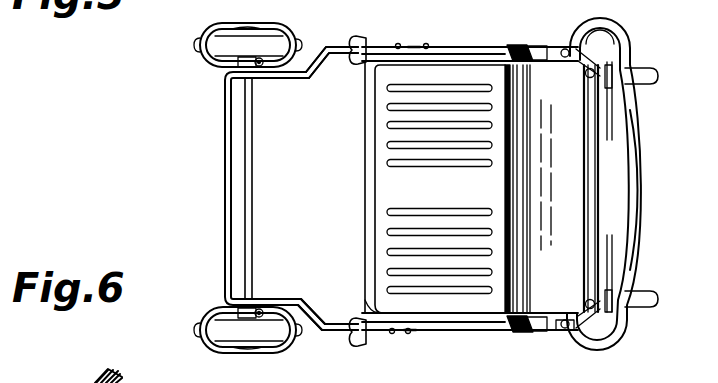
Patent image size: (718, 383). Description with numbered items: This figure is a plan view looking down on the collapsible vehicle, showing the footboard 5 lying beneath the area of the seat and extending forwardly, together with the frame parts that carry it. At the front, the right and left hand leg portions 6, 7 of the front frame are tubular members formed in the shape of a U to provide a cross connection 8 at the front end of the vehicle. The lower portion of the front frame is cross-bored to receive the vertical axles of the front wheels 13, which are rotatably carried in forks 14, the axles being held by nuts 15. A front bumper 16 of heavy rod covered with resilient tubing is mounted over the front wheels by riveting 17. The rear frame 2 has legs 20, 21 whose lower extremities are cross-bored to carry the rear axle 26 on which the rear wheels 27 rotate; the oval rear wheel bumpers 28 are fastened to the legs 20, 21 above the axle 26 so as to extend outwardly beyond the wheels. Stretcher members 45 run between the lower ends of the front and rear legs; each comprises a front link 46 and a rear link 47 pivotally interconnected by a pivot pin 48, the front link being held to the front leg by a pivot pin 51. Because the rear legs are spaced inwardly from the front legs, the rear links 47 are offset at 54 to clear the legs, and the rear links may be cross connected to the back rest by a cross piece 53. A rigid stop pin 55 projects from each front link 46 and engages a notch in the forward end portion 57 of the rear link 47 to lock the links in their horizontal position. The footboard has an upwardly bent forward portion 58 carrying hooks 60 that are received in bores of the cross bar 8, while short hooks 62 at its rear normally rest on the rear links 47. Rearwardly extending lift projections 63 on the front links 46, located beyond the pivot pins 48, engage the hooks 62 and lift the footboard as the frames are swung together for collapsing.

The rear frame 2 is at (440, 2).
The footboard 5 is at (395, 182).
The right hand leg portion 6 is at (536, 335).
The left hand leg portion 7 is at (541, 47).
The cross connection 8 is at (603, 191).
The front wheel 13 is at (658, 76).
The fork 14 is at (612, 64).
The nut 15 is at (604, 49).
The front bumper 16 is at (641, 180).
The riveting 17 is at (562, 336).
The rear frame leg 20 is at (256, 69).
The rear frame leg 21 is at (256, 307).
The rear axle 26 is at (253, 172).
The rear wheel 27 is at (197, 54).
The rear wheel bumper 28 is at (237, 24).
The stretcher member 45 is at (448, 47).
The front link 46 is at (492, 47).
The rear link 47 is at (350, 55).
The pivot pin 48 is at (397, 45).
The pivot pin 51 is at (565, 48).
The cross piece 53 is at (225, 183).
The offset 54 is at (315, 63).
The stop pin 55 is at (426, 44).
The forward end portion 57 is at (412, 45).
The forward portion 58 is at (578, 187).
The hook 60 is at (596, 38).
The hook 62 is at (358, 40).
The lift projection 63 is at (375, 315).